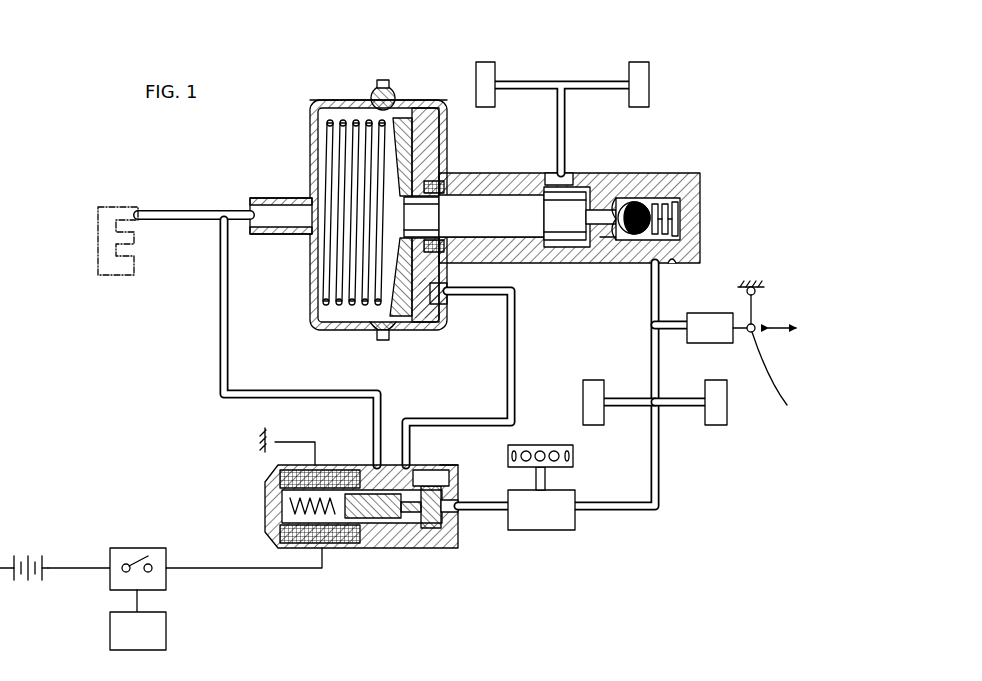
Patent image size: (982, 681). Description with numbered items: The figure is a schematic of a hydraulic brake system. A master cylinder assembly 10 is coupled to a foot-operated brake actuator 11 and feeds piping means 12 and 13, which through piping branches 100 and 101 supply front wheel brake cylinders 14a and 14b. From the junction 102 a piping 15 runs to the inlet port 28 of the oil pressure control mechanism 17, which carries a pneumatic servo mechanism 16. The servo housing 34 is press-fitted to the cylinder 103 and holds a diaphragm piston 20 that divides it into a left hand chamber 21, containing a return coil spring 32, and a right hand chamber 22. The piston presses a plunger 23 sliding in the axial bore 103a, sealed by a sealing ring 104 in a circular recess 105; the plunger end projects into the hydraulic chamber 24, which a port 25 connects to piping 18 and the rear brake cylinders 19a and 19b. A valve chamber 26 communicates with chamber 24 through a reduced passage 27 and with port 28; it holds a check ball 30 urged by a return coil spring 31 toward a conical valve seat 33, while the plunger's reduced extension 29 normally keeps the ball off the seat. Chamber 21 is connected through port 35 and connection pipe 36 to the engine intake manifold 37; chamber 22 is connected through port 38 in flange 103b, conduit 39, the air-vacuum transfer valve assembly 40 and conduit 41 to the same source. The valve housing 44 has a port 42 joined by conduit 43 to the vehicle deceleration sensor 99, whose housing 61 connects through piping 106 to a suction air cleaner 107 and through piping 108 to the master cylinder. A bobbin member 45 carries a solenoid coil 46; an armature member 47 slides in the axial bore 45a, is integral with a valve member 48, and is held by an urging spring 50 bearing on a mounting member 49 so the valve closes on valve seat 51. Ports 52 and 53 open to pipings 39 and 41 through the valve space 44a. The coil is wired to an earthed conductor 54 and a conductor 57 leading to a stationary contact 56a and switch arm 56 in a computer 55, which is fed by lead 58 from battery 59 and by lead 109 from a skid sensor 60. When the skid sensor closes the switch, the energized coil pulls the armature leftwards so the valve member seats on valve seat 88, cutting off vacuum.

The pneumatic servo mechanism 16 is at (360, 80).
The housing 34 is at (330, 104).
The return coil spring 32 is at (308, 171).
The left hand chamber 21 is at (340, 304).
The right hand chamber 22 is at (395, 102).
The cylinder 103 is at (486, 166).
The axial bore 103a is at (480, 206).
The flange 103b is at (428, 320).
The sealing ring 104 is at (420, 115).
The circular recess 105 is at (440, 180).
The diaphragm piston 20 is at (404, 212).
The port 35 is at (260, 198).
The connection pipe 36 is at (164, 208).
The engine intake manifold 37 is at (114, 206).
The oil pressure control mechanism 17 is at (714, 188).
The piping 18 is at (564, 142).
The brake cylinder 19a is at (482, 70).
The brake cylinder 19b is at (641, 70).
The plunger 23 is at (568, 198).
The hydraulic chamber 24 is at (560, 250).
The port 25 is at (544, 176).
The valve chamber 26 is at (682, 220).
The reduced passage 27 is at (600, 226).
The inlet port 28 is at (670, 262).
The reduced extension 29 is at (608, 238).
The check ball 30 is at (634, 202).
The return coil spring 31 is at (674, 194).
The valve seat 33 is at (618, 196).
The piping 15 is at (650, 300).
The junction 102 is at (650, 328).
The piping means 12 is at (668, 324).
The master cylinder assembly 10 is at (704, 326).
The manual brake actuator 11 is at (765, 346).
The piping means 13 is at (650, 372).
The brake cylinder 14a is at (590, 384).
The brake cylinder 14b is at (714, 408).
The piping branch 100 is at (630, 406).
The piping branch 101 is at (686, 406).
The piping 108 is at (660, 502).
The port 38 is at (448, 296).
The conduit 39 is at (508, 334).
The conduit 41 is at (272, 392).
The valve seat 88 is at (410, 452).
The port 53 is at (378, 464).
The earthed conductor 54 is at (302, 440).
The air-vacuum transfer valve assembly 40 is at (262, 467).
The bobbin member 45 is at (266, 540).
The axial bore 45a is at (304, 548).
The solenoid coil 46 is at (334, 548).
The armature member 47 is at (344, 494).
The valve member 48 is at (416, 522).
The mounting member 49 is at (268, 500).
The urging spring 50 is at (288, 503).
The valve seat 51 is at (438, 528).
The port 52 is at (420, 470).
The housing 44 is at (446, 466).
The valve space 44a is at (374, 548).
The port 42 is at (454, 522).
The conduit 43 is at (474, 502).
The vehicle deceleration sensor 99 is at (552, 528).
The piping 106 is at (545, 476).
The suction air cleaner 107 is at (544, 444).
The battery 59 is at (30, 554).
The lead 58 is at (70, 566).
The computer 55 is at (184, 525).
The switch arm 56 is at (126, 564).
The stationary contact 56a is at (150, 572).
The conductor 57 is at (238, 568).
The lead 109 is at (134, 600).
The skid sensor 60 is at (150, 640).
The housing 61 is at (106, 636).